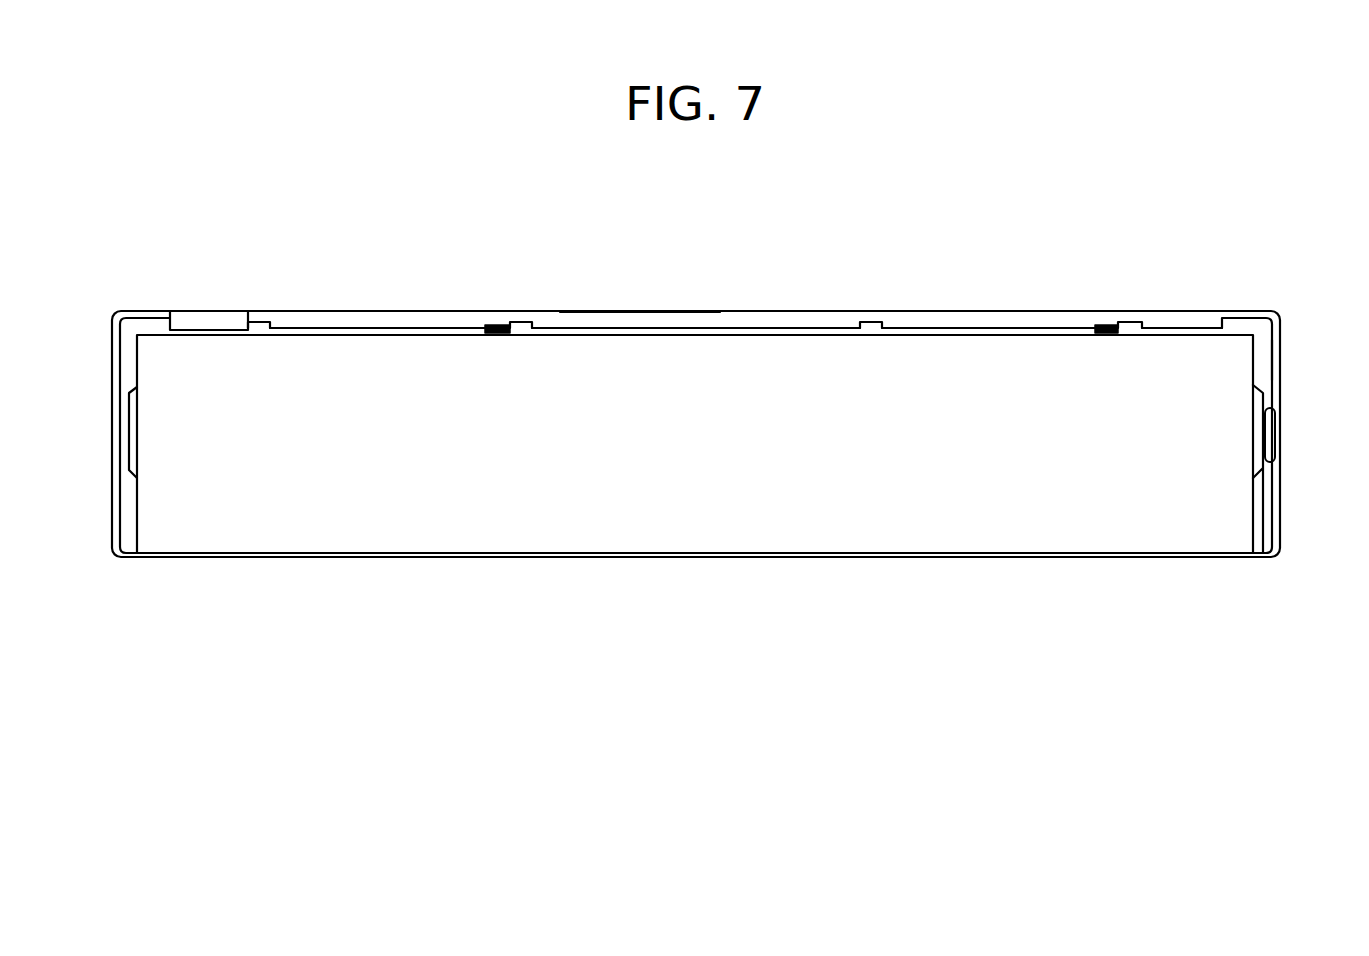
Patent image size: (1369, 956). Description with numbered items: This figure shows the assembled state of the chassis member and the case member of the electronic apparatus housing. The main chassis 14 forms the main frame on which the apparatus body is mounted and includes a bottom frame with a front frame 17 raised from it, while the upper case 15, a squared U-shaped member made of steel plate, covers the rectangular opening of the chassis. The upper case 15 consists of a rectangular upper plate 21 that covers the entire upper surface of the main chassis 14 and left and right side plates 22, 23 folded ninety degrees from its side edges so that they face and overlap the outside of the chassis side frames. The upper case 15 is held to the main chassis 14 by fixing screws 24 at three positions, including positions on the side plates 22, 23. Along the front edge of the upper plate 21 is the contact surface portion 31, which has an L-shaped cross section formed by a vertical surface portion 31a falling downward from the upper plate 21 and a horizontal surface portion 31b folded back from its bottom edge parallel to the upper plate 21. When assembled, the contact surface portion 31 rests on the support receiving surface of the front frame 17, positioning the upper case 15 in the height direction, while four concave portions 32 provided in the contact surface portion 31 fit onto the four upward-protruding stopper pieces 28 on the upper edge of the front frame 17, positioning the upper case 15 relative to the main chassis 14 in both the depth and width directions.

The main chassis 14 is at (700, 424).
The upper case 15 is at (1248, 301).
The front frame 17 is at (716, 537).
The upper plate 21 is at (780, 312).
The side plate 22 is at (1281, 358).
The side plate 23 is at (112, 492).
The fixing screw 24 is at (1281, 428).
The stopper piece 28 is at (261, 322).
The contact surface portion 31 is at (700, 218).
The vertical surface portion 31a is at (608, 317).
The horizontal surface portion 31b is at (673, 332).
The concave portion 32 is at (222, 327).